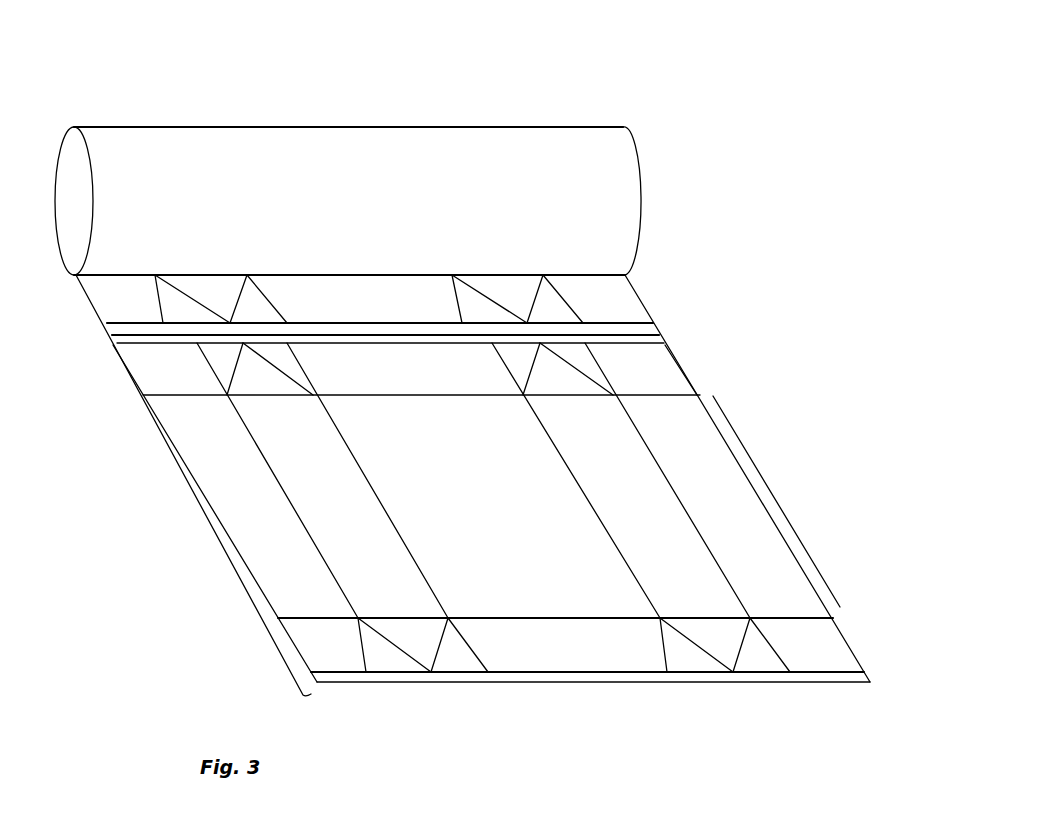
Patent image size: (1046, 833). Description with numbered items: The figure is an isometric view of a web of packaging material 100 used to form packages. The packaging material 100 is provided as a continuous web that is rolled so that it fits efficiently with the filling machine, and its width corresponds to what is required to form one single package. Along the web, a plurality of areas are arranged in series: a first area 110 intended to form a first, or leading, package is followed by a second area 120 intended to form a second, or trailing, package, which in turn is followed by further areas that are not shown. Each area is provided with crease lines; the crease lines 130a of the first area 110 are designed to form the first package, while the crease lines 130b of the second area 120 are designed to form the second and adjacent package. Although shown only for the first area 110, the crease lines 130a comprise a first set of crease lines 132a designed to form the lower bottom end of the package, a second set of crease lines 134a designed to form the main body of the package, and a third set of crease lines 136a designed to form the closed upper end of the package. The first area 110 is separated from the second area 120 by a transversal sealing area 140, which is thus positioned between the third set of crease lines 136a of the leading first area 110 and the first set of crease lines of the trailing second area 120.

The packaging material 100 is at (645, 90).
The first area 110 is at (188, 498).
The second area 120 is at (58, 286).
The crease lines of the first area 130a is at (560, 497).
The crease lines of the second area 130b is at (592, 308).
The first set of crease lines 132a is at (876, 682).
The second set of crease lines 134a is at (780, 500).
The third set of crease lines 136a is at (672, 339).
The transversal sealing area 140 is at (668, 330).